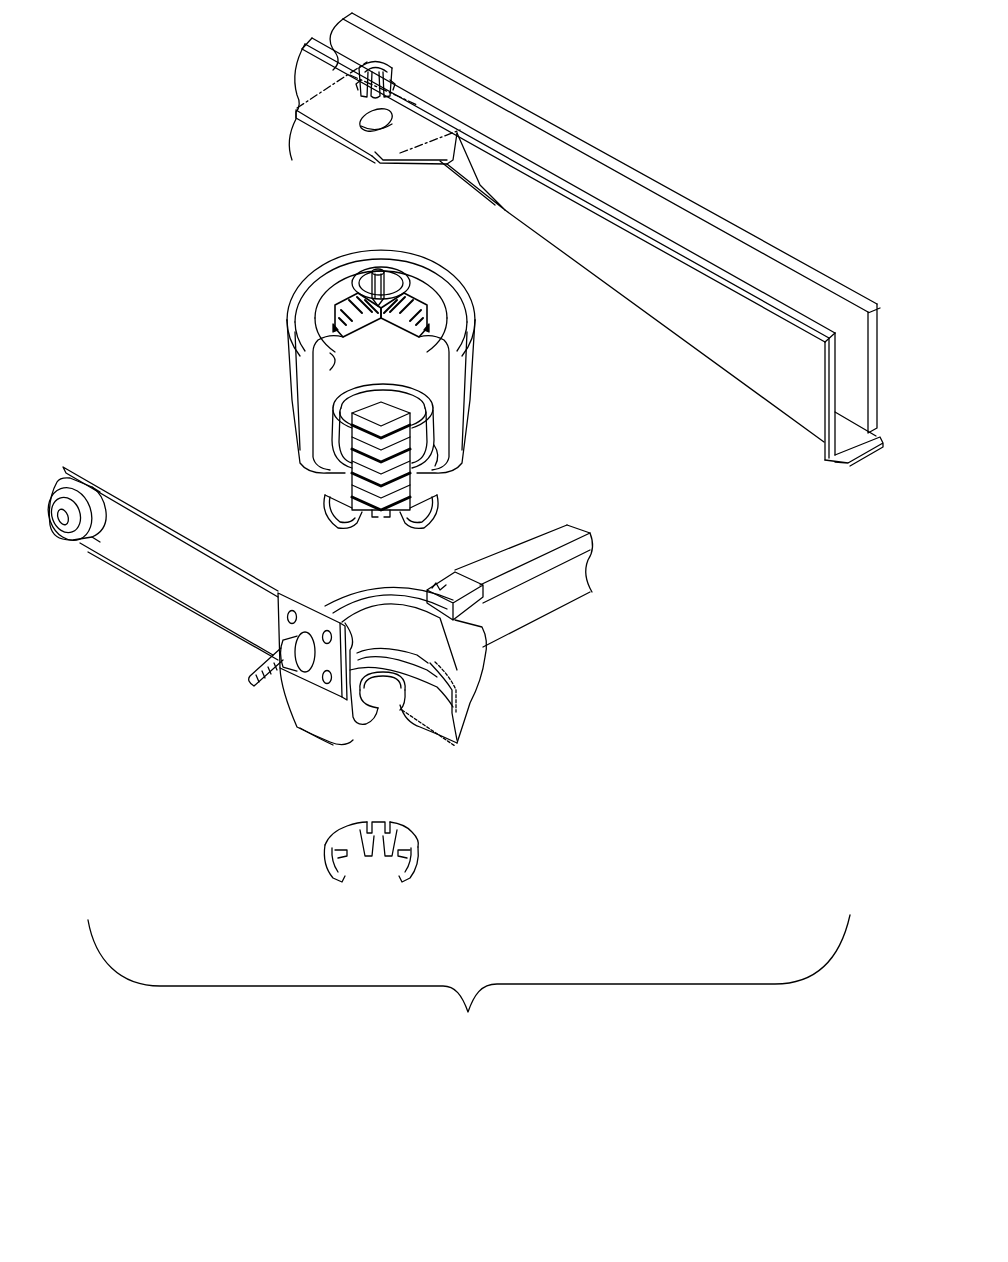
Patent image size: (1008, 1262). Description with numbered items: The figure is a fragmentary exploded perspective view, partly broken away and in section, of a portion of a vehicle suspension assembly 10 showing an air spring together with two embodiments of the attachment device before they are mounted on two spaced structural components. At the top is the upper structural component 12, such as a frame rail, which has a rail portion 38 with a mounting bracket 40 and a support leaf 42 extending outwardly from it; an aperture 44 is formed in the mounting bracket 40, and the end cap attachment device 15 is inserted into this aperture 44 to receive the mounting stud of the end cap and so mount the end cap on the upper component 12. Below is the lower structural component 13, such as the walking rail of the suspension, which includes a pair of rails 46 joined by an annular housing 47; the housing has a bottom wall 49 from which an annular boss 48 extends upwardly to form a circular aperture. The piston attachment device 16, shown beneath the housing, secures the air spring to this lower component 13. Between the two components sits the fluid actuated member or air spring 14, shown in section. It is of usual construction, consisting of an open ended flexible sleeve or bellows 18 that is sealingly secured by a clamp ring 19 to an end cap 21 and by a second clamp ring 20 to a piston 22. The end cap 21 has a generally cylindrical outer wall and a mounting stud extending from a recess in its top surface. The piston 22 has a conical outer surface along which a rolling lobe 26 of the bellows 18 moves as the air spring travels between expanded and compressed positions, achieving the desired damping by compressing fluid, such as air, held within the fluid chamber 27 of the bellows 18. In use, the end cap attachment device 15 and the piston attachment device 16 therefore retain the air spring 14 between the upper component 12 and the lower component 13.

The suspension assembly 10 is at (226, 320).
The upper structural component 12 is at (540, 112).
The lower structural component 13 is at (175, 602).
The air spring 14 is at (476, 420).
The end cap attachment device 15 is at (398, 52).
The piston attachment device 16 is at (426, 838).
The bellows 18 is at (470, 368).
The clamp ring 19 is at (437, 318).
The clamp ring 20 is at (413, 430).
The end cap 21 is at (333, 278).
The piston 22 is at (336, 481).
The rolling lobe 26 is at (432, 463).
The fluid chamber 27 is at (333, 365).
The rail portion 38 is at (730, 347).
The mounting bracket 40 is at (306, 122).
The support leaf 42 is at (405, 160).
The aperture 44 is at (378, 127).
The rails 46 is at (147, 558).
The annular housing 47 is at (480, 697).
The annular boss 48 is at (383, 692).
The bottom wall 49 is at (420, 707).